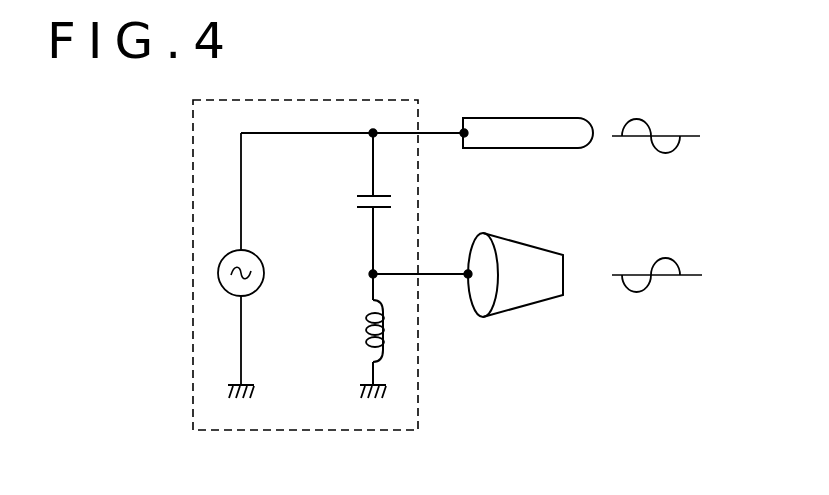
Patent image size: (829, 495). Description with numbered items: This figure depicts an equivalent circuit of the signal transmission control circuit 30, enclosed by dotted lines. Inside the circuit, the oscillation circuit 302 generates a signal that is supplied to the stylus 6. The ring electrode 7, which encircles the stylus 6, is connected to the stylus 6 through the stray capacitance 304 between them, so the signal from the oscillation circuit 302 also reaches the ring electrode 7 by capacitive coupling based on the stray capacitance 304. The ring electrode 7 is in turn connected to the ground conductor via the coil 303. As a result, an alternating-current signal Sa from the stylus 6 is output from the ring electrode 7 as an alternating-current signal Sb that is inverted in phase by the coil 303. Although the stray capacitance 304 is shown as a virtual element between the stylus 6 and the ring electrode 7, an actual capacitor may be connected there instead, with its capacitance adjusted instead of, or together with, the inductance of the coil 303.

The signal transmission control circuit 30 is at (333, 431).
The oscillation circuit 302 is at (264, 273).
The coil 303 is at (366, 323).
The stray capacitance 304 is at (355, 203).
The stylus 6 is at (517, 148).
The ring electrode 7 is at (525, 305).
The alternating-current signal Sa is at (638, 118).
The alternating-current signal Sb is at (641, 293).